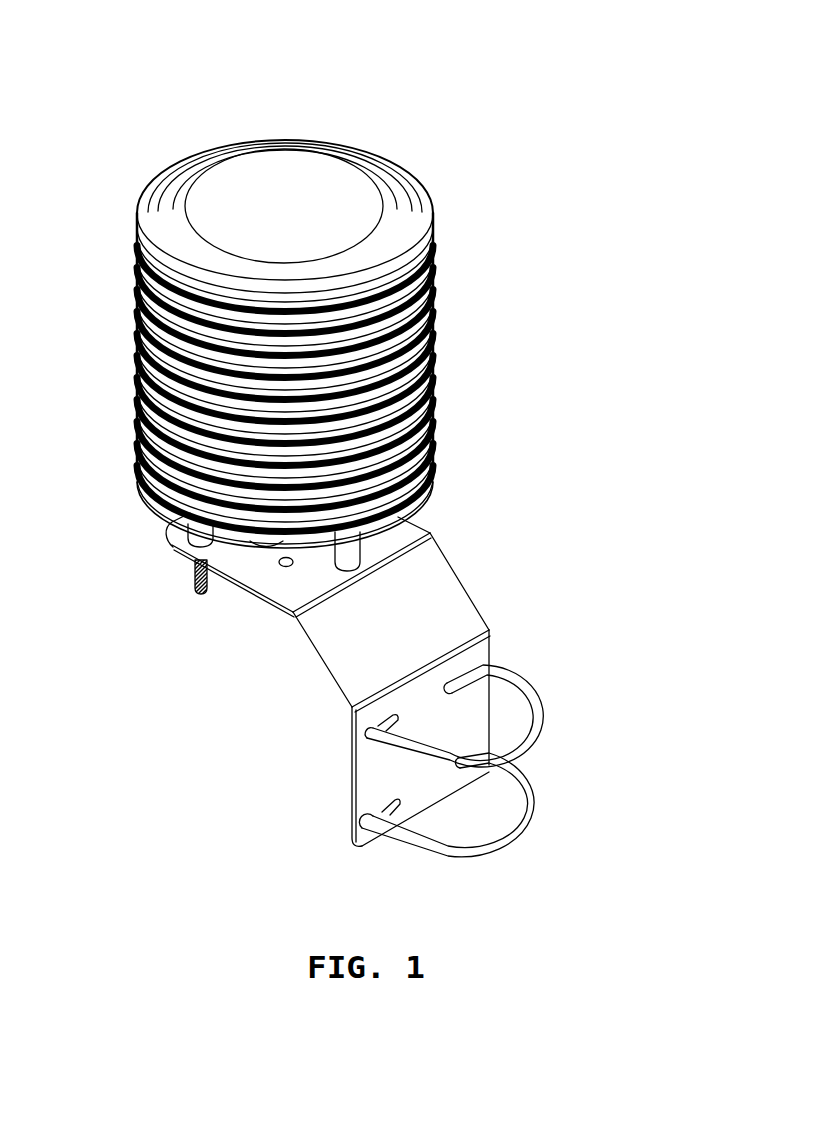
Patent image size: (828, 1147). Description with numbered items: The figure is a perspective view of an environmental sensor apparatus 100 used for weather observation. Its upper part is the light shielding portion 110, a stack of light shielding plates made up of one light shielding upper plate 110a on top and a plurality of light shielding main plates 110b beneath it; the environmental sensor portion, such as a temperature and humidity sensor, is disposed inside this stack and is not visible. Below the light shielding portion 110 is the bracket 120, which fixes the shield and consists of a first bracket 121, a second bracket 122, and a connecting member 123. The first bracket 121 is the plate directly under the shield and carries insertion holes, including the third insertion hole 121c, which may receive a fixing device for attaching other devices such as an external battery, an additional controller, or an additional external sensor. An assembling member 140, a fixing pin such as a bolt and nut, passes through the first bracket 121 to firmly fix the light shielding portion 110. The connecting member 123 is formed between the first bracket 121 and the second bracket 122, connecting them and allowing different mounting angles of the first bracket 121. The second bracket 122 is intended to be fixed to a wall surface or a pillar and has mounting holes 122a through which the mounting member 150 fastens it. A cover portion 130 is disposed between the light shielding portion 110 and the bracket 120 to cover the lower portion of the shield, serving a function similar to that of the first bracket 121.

The environmental sensor apparatus 100 is at (325, 34).
The light shielding portion 110 is at (605, 214).
The light shielding upper plate 110a is at (430, 222).
The light shielding main plates 110b is at (432, 257).
The bracket 120 is at (473, 603).
The first bracket 121 is at (306, 596).
The third insertion hole 121c is at (278, 562).
The second bracket 122 is at (387, 783).
The mounting holes 122a is at (489, 668).
The connecting member 123 is at (363, 682).
The cover portion 130 is at (352, 551).
The assembling member 140 is at (193, 576).
The mounting member 150 is at (544, 727).